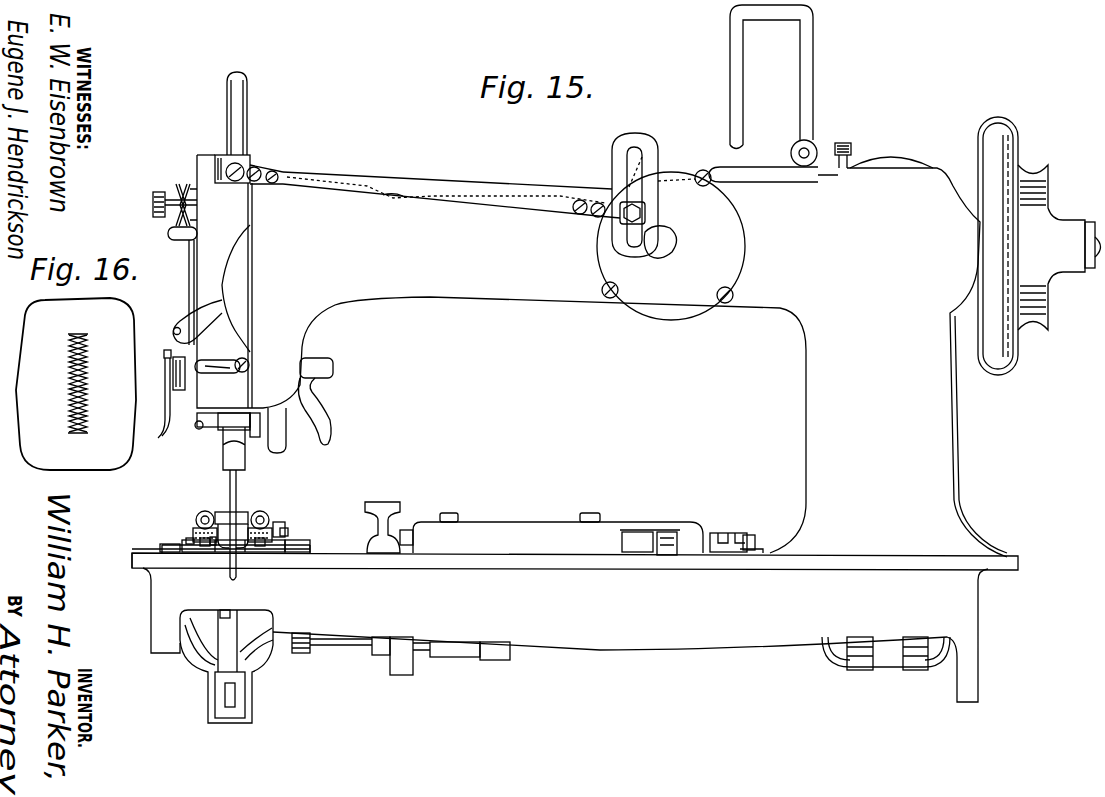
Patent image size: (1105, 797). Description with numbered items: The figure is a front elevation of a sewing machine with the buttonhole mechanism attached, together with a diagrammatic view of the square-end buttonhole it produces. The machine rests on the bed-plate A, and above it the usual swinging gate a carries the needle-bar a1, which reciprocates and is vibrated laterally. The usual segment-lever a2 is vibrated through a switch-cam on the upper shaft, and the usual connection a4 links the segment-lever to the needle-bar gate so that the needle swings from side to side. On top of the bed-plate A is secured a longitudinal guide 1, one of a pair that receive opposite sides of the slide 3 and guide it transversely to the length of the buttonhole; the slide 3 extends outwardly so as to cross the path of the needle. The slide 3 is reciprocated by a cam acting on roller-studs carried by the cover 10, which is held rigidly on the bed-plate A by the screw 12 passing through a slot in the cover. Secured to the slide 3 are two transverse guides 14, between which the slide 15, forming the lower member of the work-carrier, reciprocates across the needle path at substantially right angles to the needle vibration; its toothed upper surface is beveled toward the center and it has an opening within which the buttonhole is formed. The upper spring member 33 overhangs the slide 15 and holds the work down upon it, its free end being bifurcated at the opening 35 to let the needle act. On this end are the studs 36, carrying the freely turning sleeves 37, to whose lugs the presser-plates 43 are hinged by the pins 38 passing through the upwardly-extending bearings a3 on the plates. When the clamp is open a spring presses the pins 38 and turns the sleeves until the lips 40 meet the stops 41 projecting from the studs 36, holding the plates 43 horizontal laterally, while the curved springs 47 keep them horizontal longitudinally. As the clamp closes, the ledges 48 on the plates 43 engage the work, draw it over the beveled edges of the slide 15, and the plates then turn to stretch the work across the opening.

The swinging gate a is at (250, 159).
The needle-bar a1 is at (243, 82).
The segment-lever a2 is at (650, 151).
The upwardly-extending bearings a3 is at (190, 510).
The connection a4 is at (420, 191).
The guide 1 is at (543, 557).
The slide 3 is at (135, 556).
The cover 10 is at (581, 534).
The screw 12 is at (355, 522).
The guides 14 is at (165, 548).
The slide 15 is at (207, 548).
The upper spring member 33 is at (250, 512).
The opening 35 is at (221, 512).
The studs 36 is at (272, 514).
The sleeves 37 is at (270, 510).
The pins 38 is at (193, 528).
The lips 40 is at (207, 508).
The stops 41 is at (199, 507).
The presser-plates 43 is at (205, 546).
The curved springs 47 is at (201, 546).
The ledges 48 is at (188, 540).
The bed-plate A is at (337, 562).